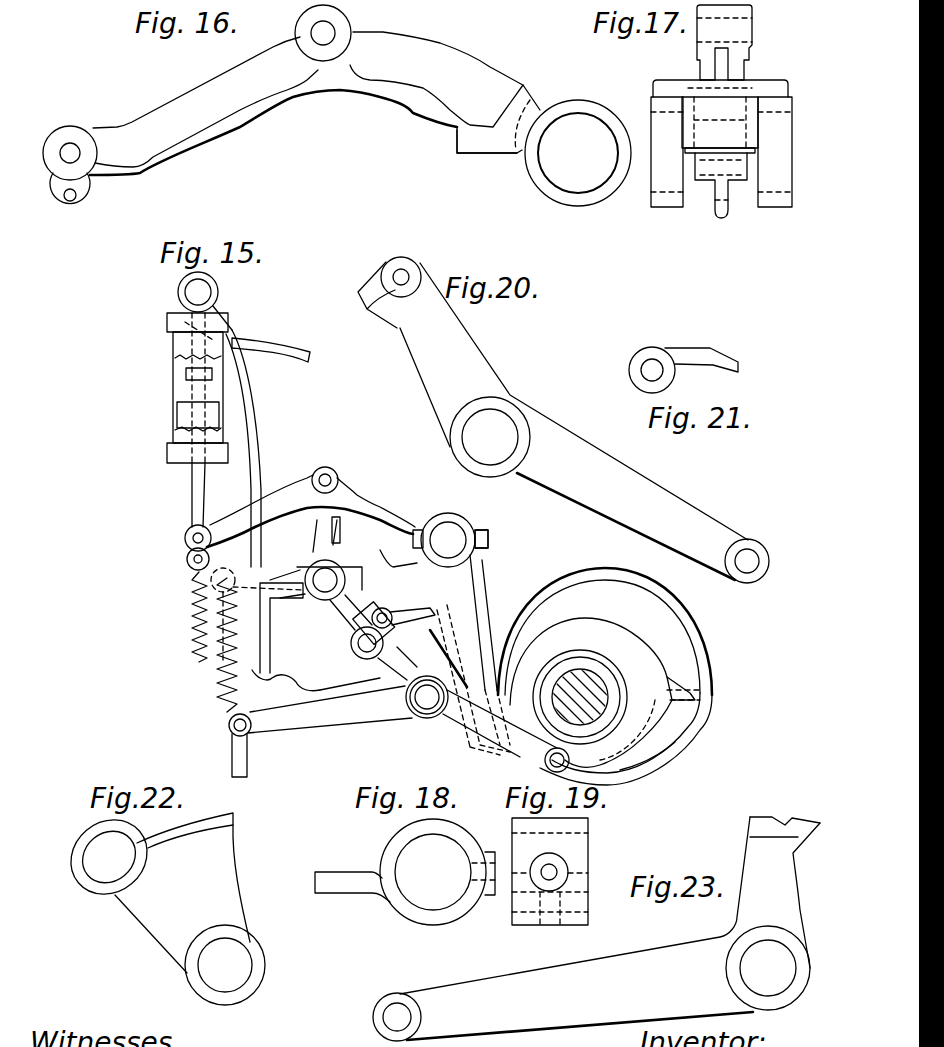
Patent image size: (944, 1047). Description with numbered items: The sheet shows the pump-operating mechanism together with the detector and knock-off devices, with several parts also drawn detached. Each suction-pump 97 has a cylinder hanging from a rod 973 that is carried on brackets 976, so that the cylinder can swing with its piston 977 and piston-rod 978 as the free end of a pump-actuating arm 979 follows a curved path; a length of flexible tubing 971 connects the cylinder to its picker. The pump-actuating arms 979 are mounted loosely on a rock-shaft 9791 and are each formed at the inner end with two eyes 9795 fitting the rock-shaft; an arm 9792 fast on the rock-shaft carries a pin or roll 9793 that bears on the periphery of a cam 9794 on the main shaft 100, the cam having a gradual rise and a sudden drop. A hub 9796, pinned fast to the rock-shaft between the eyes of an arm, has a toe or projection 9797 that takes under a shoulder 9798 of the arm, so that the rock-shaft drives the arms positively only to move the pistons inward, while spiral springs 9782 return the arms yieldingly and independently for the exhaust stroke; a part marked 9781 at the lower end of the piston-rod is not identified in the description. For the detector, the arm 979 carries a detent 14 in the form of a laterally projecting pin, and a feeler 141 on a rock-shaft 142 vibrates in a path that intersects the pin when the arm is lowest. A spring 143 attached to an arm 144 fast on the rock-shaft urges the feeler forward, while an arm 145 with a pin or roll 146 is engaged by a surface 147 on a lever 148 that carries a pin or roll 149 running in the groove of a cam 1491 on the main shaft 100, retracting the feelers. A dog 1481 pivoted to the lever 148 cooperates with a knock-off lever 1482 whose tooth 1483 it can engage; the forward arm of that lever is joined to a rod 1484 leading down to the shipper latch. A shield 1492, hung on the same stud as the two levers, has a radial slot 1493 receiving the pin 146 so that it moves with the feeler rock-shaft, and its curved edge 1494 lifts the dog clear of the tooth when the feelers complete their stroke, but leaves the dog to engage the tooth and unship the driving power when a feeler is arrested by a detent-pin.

In FIG. 15, the detent 14 is at (327, 475).
In FIG. 15, the suction-pump 97 is at (170, 381).
In FIG. 15, the main shaft 100 is at (600, 672).
In FIG. 15, the feeler 141 is at (355, 522).
In FIG. 15, the rock-shaft 142 is at (325, 605).
In FIG. 15, the spring 143 is at (215, 665).
In FIG. 15, the arm 144 is at (237, 570).
In FIG. 15, the arm 145 is at (352, 648).
In FIG. 15, the pin or roll 146 is at (320, 690).
In FIG. 15, the surface 147 is at (338, 578).
In FIG. 20, the surface 147 is at (370, 312).
In FIG. 15, the lever 148 is at (382, 700).
In FIG. 20, the lever 148 is at (485, 362).
In FIG. 15, the pin or roll 149 is at (570, 768).
In FIG. 15, the flexible tubing 971 is at (262, 346).
In FIG. 15, the rod 973 is at (208, 286).
In FIG. 15, the bracket 976 is at (266, 422).
In FIG. 15, the piston 977 is at (212, 380).
In FIG. 15, the piston-rod 978 is at (190, 498).
In FIG. 16, the pump-actuating arm 979 is at (205, 84).
In FIG. 17, the pump-actuating arm 979 is at (742, 70).
In FIG. 15, the pump-actuating arm 979 is at (358, 490).
In FIG. 15, the dog 1481 is at (430, 608).
In FIG. 21, the dog 1481 is at (683, 345).
In FIG. 15, the lever 1482 is at (368, 725).
In FIG. 23, the lever 1482 is at (668, 933).
In FIG. 23, the tooth 1483 is at (785, 822).
In FIG. 15, the rod 1484 is at (218, 745).
In FIG. 15, the cam 1491 is at (665, 745).
In FIG. 15, the shield 1492 is at (415, 712).
In FIG. 22, the shield 1492 is at (152, 920).
In FIG. 22, the radial slot 1493 is at (78, 850).
In FIG. 22, the curved edge 1494 is at (178, 832).
In FIG. 16, the link 9781 is at (68, 150).
In FIG. 15, the link 9781 is at (187, 545).
In FIG. 15, the spiral spring 9782 is at (190, 620).
In FIG. 15, the rock-shaft 9791 is at (490, 533).
In FIG. 15, the arm 9792 is at (510, 572).
In FIG. 15, the pin or roll 9793 is at (510, 752).
In FIG. 15, the cam 9794 is at (708, 640).
In FIG. 16, the eye 9795 is at (540, 190).
In FIG. 17, the eye 9795 is at (667, 210).
In FIG. 15, the eye 9795 is at (448, 540).
In FIG. 18, the hub 9796 is at (423, 920).
In FIG. 19, the hub 9796 is at (590, 852).
In FIG. 15, the toe or projection 9797 is at (490, 565).
In FIG. 18, the toe or projection 9797 is at (343, 868).
In FIG. 16, the shoulder 9798 is at (477, 157).
In FIG. 17, the shoulder 9798 is at (750, 160).
In FIG. 15, the shoulder 9798 is at (378, 530).